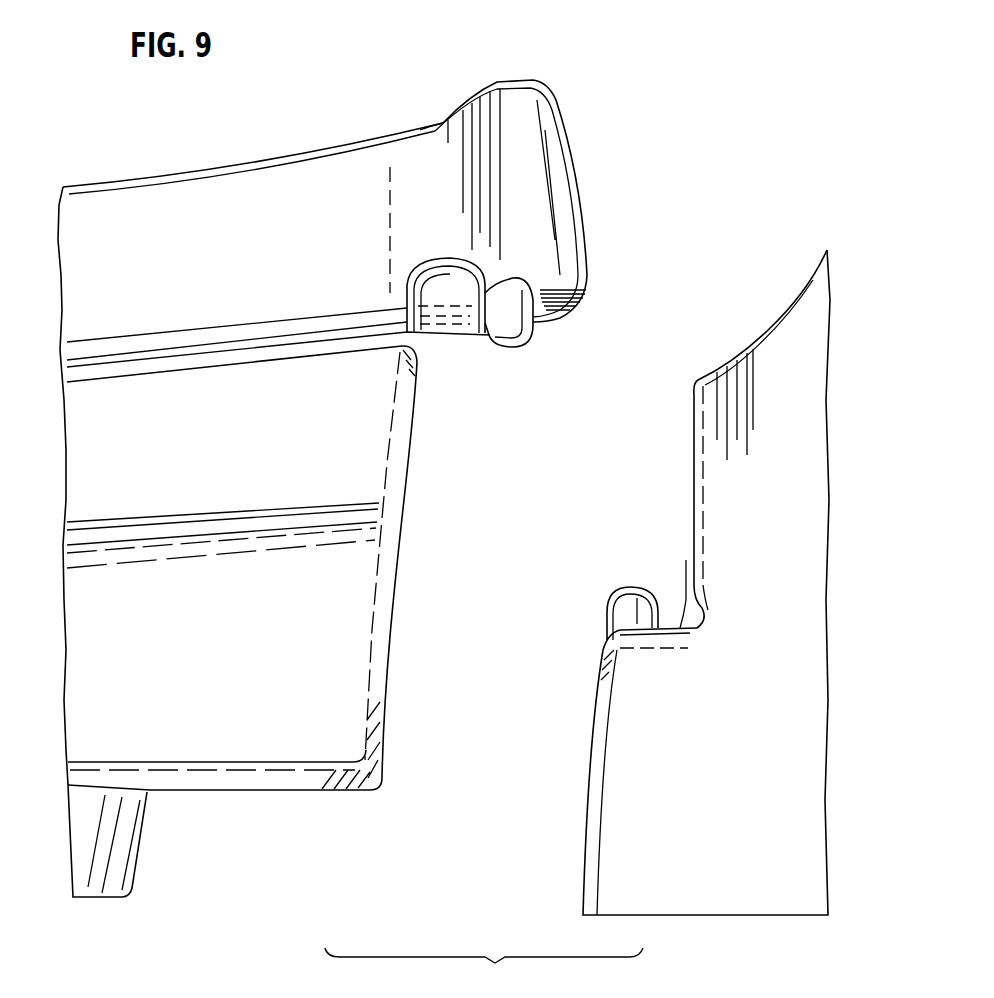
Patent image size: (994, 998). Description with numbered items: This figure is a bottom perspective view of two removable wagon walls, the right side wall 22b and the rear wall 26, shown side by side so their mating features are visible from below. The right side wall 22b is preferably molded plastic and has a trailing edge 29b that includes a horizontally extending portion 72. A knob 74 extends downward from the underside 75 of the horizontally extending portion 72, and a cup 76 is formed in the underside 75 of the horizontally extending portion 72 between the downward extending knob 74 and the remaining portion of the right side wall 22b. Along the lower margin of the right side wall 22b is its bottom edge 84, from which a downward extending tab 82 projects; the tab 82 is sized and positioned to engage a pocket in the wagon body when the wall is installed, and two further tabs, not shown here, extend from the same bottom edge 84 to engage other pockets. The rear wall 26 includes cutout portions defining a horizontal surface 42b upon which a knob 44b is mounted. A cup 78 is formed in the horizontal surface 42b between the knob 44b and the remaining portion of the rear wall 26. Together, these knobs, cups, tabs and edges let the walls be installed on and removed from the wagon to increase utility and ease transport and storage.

The right side wall 22b is at (61, 437).
The rear wall 26 is at (834, 531).
The trailing edge 29b is at (443, 123).
The horizontal surface 42b is at (686, 580).
The knob 44b is at (615, 588).
The horizontally extending portion 72 is at (588, 220).
The knob 74 is at (527, 341).
The underside 75 is at (550, 312).
The cup 76 is at (447, 308).
The cup 78 is at (672, 628).
The tab 82 is at (140, 847).
The bottom edge 84 is at (323, 782).